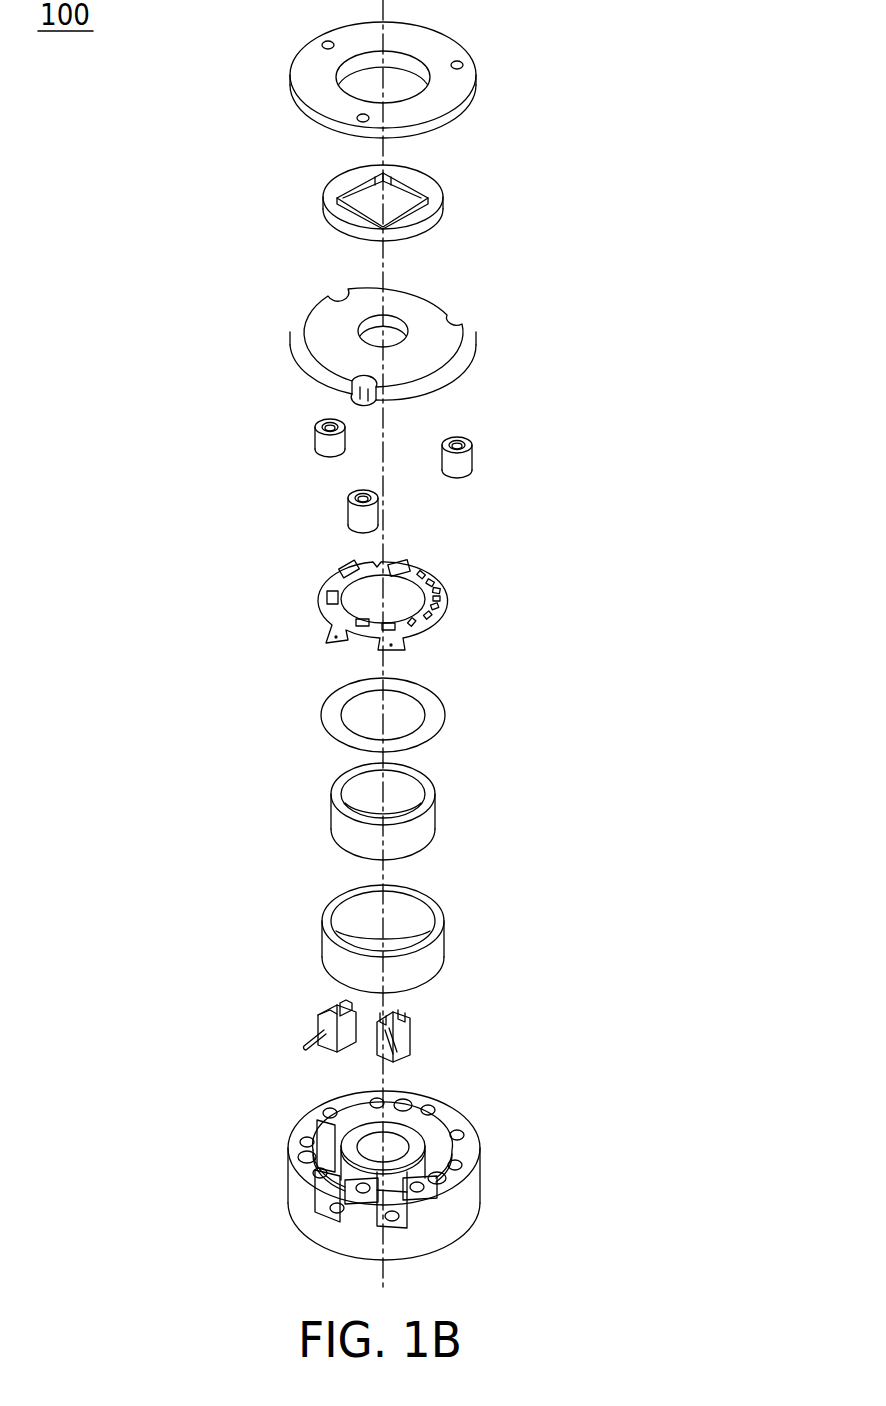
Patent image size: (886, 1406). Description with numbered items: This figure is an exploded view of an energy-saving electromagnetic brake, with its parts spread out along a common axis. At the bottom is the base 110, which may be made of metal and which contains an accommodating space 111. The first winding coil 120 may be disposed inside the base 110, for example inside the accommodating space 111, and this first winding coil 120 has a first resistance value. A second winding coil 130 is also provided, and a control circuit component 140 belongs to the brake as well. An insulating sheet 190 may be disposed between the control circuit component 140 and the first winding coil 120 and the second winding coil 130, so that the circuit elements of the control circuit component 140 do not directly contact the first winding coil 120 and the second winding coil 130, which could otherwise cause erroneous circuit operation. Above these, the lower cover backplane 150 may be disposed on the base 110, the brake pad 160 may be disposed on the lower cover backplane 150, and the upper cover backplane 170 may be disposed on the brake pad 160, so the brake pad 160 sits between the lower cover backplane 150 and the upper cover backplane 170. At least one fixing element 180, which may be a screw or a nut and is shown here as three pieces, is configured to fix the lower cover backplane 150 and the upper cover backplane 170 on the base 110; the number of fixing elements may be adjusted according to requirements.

The base 110 is at (469, 1195).
The accommodating space 111 is at (432, 1136).
The first winding coil 120 is at (431, 822).
The second winding coil 130 is at (436, 952).
The control circuit component 140 is at (319, 598).
The lower cover backplane 150 is at (455, 345).
The brake pad 160 is at (437, 202).
The upper cover backplane 170 is at (464, 78).
The fixing element 180 is at (320, 441).
The insulating sheet 190 is at (436, 712).